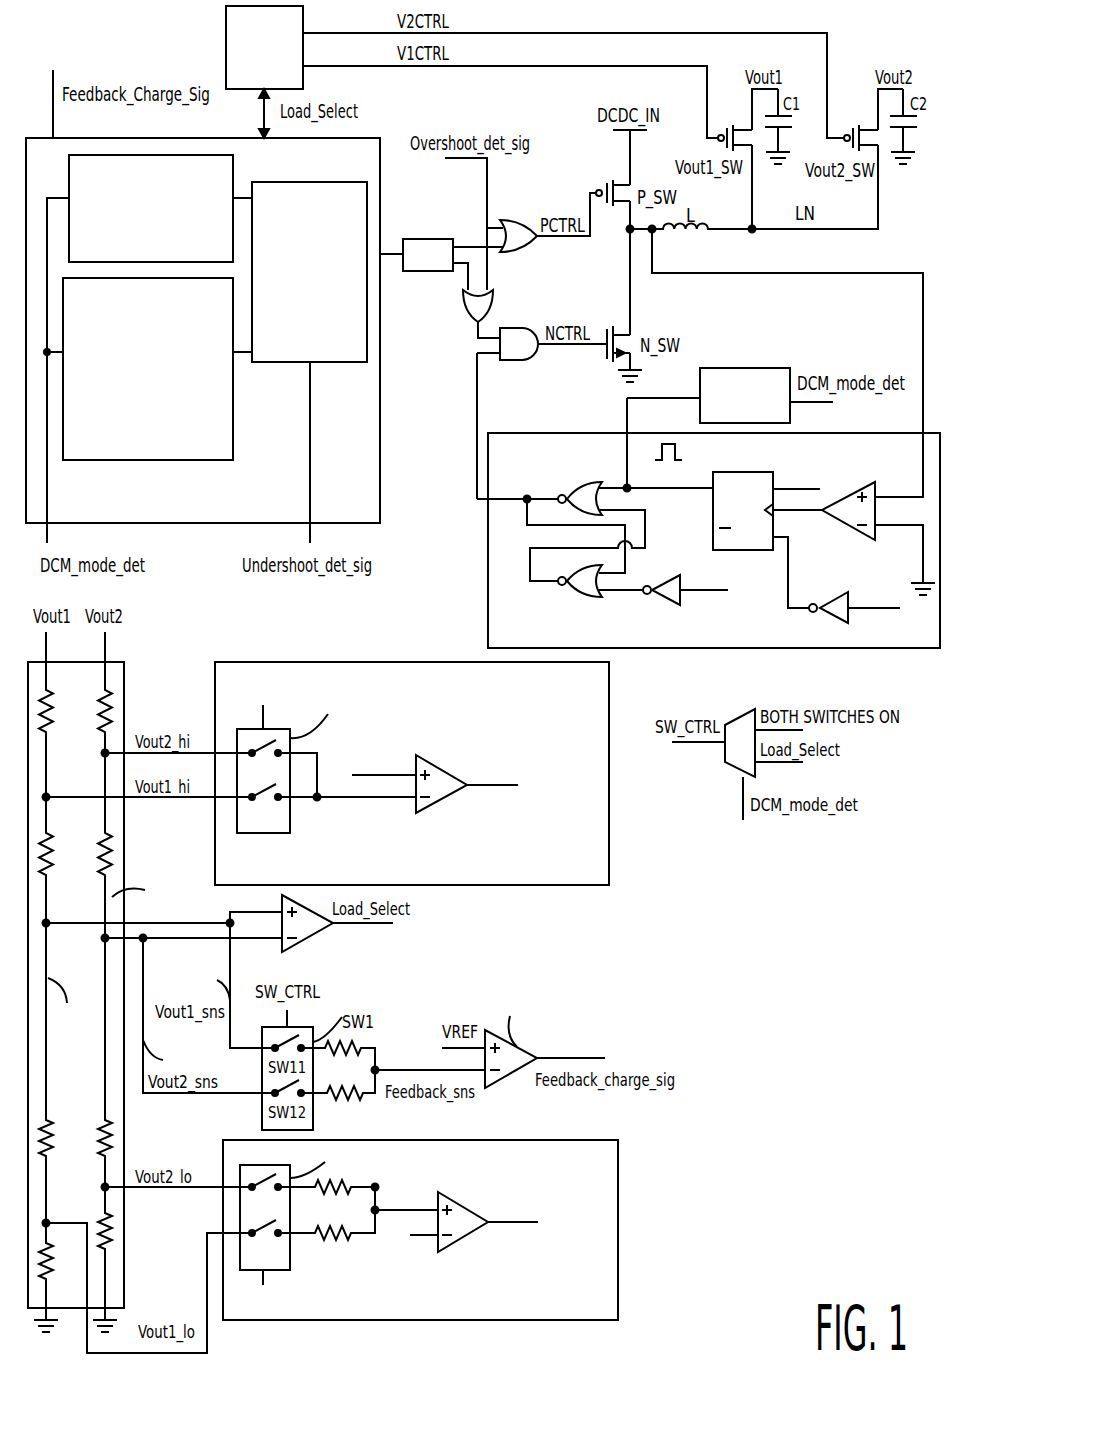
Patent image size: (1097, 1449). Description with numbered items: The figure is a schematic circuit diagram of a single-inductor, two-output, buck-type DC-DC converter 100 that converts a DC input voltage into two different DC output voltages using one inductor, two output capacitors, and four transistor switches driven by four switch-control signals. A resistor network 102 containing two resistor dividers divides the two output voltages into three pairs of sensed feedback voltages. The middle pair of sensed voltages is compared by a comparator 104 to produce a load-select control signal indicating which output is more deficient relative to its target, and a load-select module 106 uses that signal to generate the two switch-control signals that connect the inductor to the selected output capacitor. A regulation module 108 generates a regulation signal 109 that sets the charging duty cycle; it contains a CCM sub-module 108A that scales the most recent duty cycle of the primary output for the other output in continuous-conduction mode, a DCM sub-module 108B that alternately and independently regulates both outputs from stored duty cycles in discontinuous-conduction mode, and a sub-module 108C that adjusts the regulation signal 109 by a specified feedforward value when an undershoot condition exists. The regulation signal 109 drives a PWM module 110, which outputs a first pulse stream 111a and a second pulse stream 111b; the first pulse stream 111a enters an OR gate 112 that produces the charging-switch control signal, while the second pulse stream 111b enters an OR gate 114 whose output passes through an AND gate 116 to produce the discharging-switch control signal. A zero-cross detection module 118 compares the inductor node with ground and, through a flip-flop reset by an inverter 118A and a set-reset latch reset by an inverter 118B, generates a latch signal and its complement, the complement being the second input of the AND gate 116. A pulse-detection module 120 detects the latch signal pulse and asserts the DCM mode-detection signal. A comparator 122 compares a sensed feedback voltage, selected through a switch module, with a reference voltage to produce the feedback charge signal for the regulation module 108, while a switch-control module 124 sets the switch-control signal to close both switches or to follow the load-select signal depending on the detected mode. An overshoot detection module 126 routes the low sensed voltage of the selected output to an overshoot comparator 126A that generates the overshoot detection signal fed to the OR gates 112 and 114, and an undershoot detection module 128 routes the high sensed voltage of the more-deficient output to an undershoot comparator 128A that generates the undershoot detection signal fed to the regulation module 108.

The DC-DC converter 100 is at (802, 976).
The resistor network 102 is at (124, 690).
The comparator 104 is at (312, 935).
The load-select module 106 is at (226, 48).
The regulation module 108 is at (227, 340).
The CCM sub-module 108A is at (233, 168).
The DCM sub-module 108B is at (233, 398).
The sub-module 108C is at (330, 362).
The regulation signal 109 is at (400, 270).
The PWM module 110 is at (413, 236).
The PWM pulse stream 111a is at (463, 242).
The PWM pulse stream 111b is at (467, 280).
The OR gate 112 is at (522, 220).
The OR gate 114 is at (482, 323).
The AND gate 116 is at (523, 330).
The zero-cross detection (ZCD) module 118 is at (677, 562).
The inverter 118A is at (848, 620).
The inverter 118B is at (677, 573).
The pulse-detection module 120 is at (752, 368).
The comparator 122 is at (525, 1050).
The switch-control module 124 is at (733, 766).
The overshoot detection module 126 is at (464, 1230).
The overshoot comparator 126A is at (465, 1208).
The undershoot detection module 128 is at (455, 773).
The undershoot comparator 128A is at (440, 771).